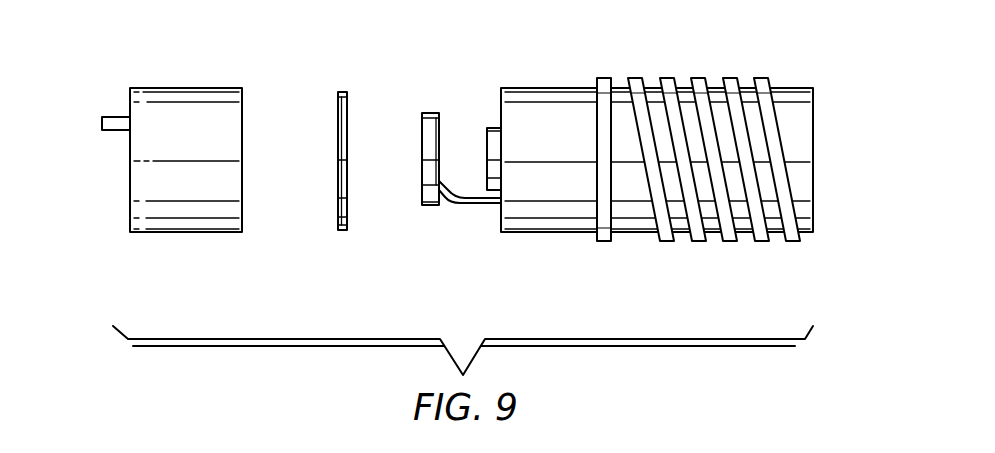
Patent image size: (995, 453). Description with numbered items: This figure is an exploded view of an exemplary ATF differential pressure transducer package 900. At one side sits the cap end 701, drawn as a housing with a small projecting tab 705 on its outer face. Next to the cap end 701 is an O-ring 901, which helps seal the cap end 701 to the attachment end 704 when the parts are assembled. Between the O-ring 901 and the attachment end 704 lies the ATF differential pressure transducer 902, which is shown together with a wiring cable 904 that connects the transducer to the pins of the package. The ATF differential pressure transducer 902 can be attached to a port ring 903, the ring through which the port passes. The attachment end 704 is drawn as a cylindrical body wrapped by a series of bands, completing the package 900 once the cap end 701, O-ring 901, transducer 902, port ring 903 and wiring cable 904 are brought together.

The ATF differential pressure transducer package 900 is at (95, 248).
The cap end 701 is at (190, 108).
The connector tab 705 is at (115, 117).
The O-ring 901 is at (343, 107).
The ATF differential pressure transducer 902 is at (428, 200).
The port ring 903 is at (494, 140).
The wiring cable 904 is at (478, 205).
The attachment end 704 is at (795, 100).